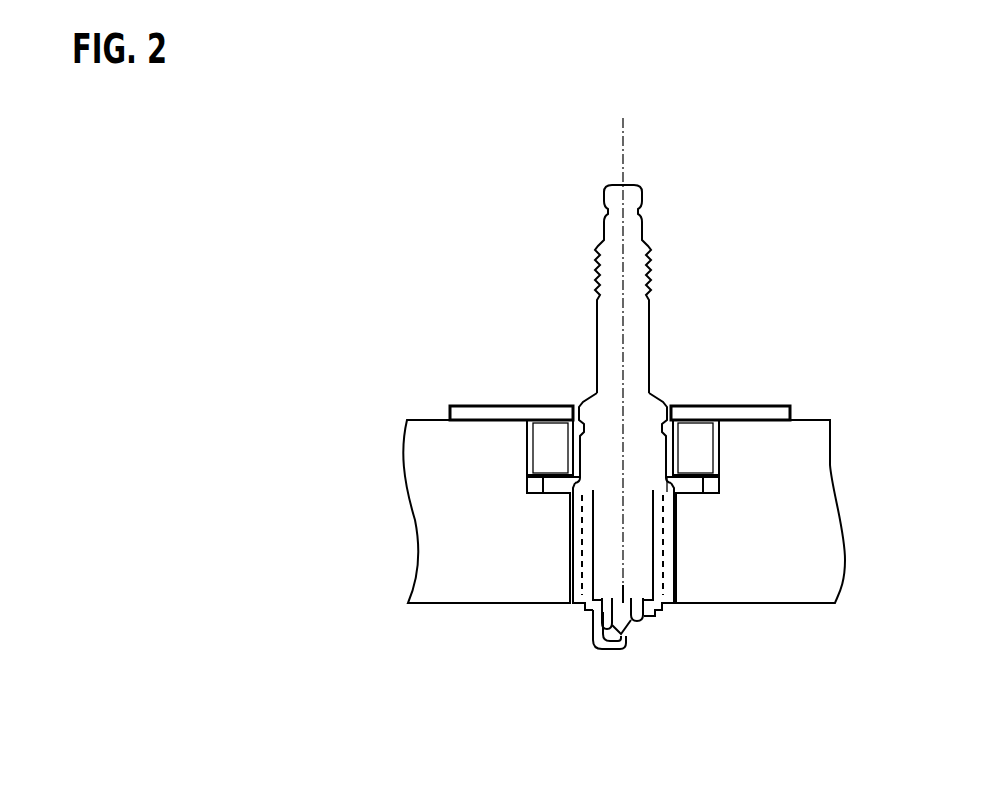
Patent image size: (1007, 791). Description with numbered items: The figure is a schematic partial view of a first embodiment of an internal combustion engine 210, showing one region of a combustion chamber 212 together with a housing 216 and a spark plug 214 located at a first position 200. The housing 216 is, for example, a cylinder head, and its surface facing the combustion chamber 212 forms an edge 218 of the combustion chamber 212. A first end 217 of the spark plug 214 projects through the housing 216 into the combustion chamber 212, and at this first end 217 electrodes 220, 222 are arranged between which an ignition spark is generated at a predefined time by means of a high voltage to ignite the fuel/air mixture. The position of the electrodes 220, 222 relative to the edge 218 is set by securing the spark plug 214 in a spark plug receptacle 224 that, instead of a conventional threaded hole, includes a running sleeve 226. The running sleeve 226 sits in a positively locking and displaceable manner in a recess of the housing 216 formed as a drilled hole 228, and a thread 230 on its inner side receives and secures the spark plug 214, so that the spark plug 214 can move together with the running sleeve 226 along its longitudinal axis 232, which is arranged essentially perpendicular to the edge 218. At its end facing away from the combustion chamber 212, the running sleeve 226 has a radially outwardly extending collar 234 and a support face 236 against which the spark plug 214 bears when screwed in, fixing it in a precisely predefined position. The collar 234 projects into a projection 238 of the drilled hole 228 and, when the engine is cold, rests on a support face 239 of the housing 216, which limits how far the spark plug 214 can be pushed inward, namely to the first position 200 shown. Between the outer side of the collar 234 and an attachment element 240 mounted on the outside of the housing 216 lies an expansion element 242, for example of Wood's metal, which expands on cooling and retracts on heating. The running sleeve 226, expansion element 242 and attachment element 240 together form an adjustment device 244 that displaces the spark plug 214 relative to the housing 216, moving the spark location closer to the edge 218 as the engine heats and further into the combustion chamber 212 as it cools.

The first position 200 is at (388, 130).
The internal combustion engine 210 is at (392, 258).
The combustion chamber 212 is at (470, 655).
The spark plug 214 is at (643, 253).
The housing 216 is at (810, 438).
The first end 217 is at (597, 665).
The edge 218 is at (780, 605).
The electrode 220 is at (627, 645).
The electrode 222 is at (623, 648).
The spark plug receptacle 224 is at (567, 617).
The running sleeve 226 is at (665, 537).
The drilled hole 228 is at (675, 594).
The thread 230 is at (677, 512).
The longitudinal axis 232 is at (625, 152).
The collar 234 is at (545, 486).
The support face 236 is at (655, 476).
The projection 238 is at (540, 483).
The support face 239 is at (538, 492).
The attachment element 240 is at (487, 415).
The expansion element 242 is at (555, 445).
The adjustment device 244 is at (552, 358).